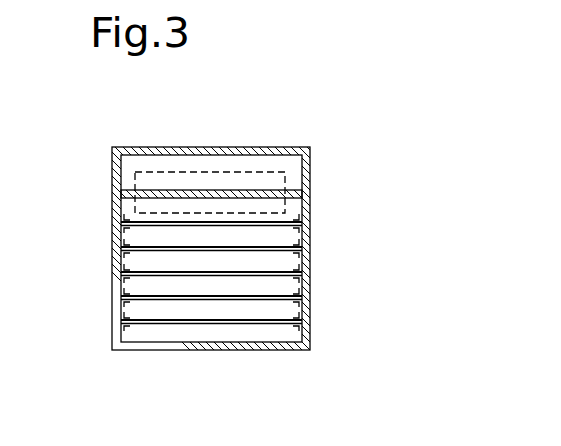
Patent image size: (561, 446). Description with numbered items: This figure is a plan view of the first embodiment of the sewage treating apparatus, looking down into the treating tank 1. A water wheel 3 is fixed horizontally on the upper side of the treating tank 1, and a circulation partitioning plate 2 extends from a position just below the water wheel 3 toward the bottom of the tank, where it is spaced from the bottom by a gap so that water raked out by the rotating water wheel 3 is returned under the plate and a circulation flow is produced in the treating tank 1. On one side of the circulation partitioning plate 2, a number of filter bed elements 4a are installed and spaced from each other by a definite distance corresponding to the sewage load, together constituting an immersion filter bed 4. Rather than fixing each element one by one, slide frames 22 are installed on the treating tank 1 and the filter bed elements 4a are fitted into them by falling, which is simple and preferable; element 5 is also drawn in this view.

The treating tank 1 is at (311, 170).
The circulation partitioning plate 2 is at (271, 193).
The water wheel 3 is at (236, 170).
The immersion filter bed 4 is at (267, 273).
The filter bed element 4a is at (267, 321).
The tray 5 is at (162, 297).
The slide frame 22 is at (302, 319).